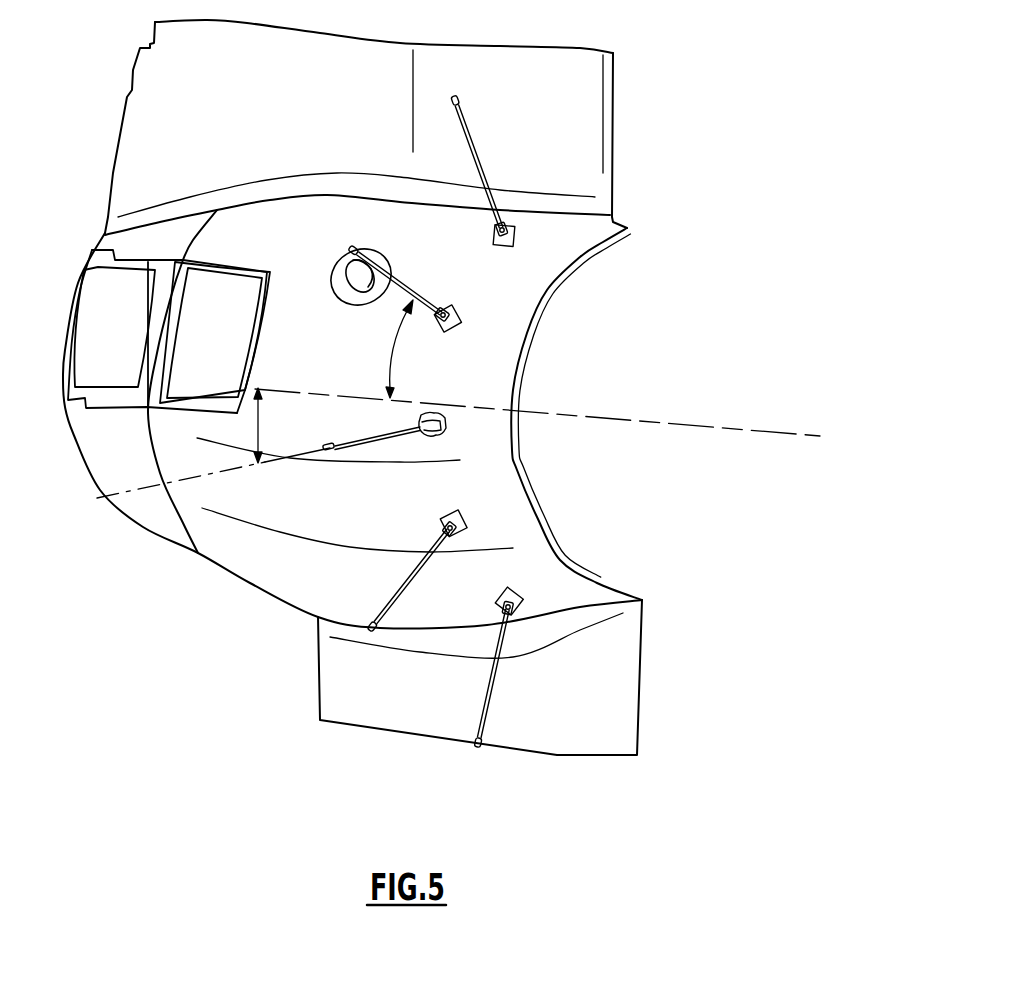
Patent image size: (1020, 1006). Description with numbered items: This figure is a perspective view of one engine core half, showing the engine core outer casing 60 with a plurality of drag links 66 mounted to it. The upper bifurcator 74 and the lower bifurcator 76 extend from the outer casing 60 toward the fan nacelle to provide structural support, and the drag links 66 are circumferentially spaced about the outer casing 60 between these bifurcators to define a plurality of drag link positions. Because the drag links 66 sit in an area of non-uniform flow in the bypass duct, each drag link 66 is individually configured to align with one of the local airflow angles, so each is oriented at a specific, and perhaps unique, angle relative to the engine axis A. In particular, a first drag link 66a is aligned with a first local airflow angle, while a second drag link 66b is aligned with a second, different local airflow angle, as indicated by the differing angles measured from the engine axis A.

The engine core outer casing 60 is at (483, 480).
The upper bifurcator 74 is at (580, 113).
The lower bifurcator 76 is at (612, 685).
The drag link 66 is at (483, 172).
The first drag link 66a is at (393, 432).
The second drag link 66b is at (414, 294).
The engine axis A is at (680, 423).